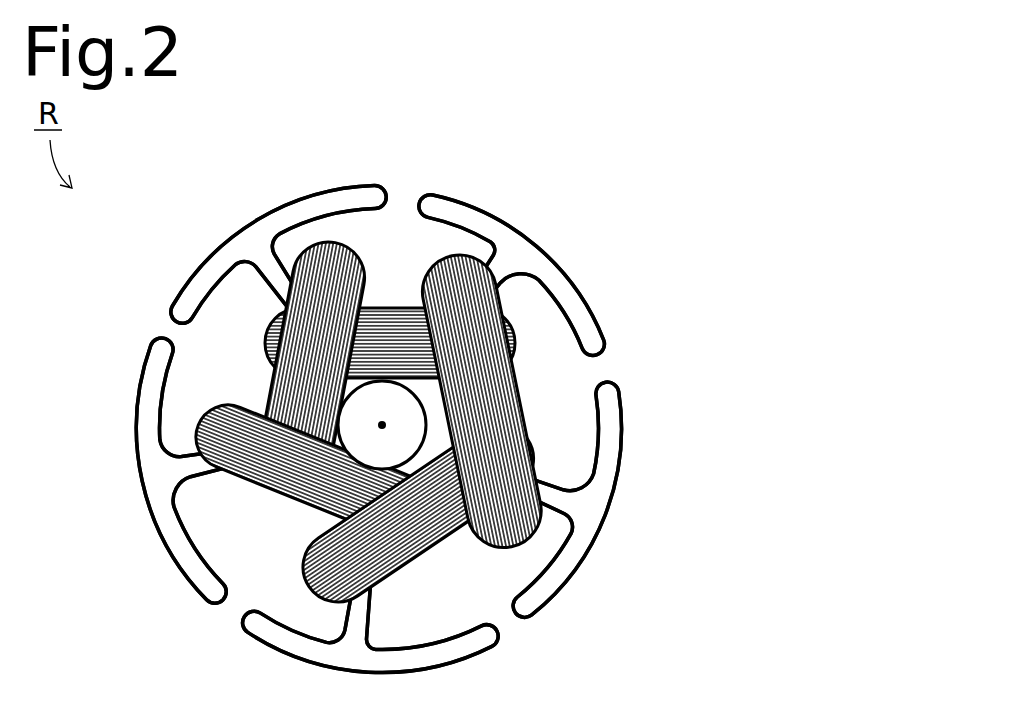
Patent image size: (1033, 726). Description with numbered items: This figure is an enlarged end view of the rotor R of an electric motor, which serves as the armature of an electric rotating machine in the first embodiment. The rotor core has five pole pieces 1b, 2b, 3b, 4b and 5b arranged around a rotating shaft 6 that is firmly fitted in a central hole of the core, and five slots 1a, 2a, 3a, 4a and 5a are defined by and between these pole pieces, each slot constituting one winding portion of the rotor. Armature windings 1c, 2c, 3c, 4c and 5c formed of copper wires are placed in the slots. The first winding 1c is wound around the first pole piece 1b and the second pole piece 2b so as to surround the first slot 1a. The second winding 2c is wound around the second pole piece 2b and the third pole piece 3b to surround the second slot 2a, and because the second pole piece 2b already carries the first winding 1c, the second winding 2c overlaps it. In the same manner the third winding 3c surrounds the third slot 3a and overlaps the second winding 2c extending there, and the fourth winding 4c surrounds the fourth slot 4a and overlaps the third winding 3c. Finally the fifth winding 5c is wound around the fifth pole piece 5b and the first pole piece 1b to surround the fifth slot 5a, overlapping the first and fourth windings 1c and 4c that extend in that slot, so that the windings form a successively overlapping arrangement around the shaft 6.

The first slot 1a is at (423, 237).
The first pole piece 1b is at (527, 258).
The first winding 1c is at (387, 305).
The second slot 2a is at (200, 387).
The second pole piece 2b is at (257, 232).
The second winding 2c is at (277, 367).
The third slot 3a is at (250, 580).
The third pole piece 3b is at (155, 452).
The third winding 3c is at (255, 483).
The fourth slot 4a is at (473, 605).
The fourth pole piece 4b is at (327, 653).
The fourth winding 4c is at (443, 540).
The fifth slot 5a is at (558, 400).
The fifth pole piece 5b is at (577, 530).
The fifth winding 5c is at (505, 398).
The rotating shaft 6 is at (382, 425).